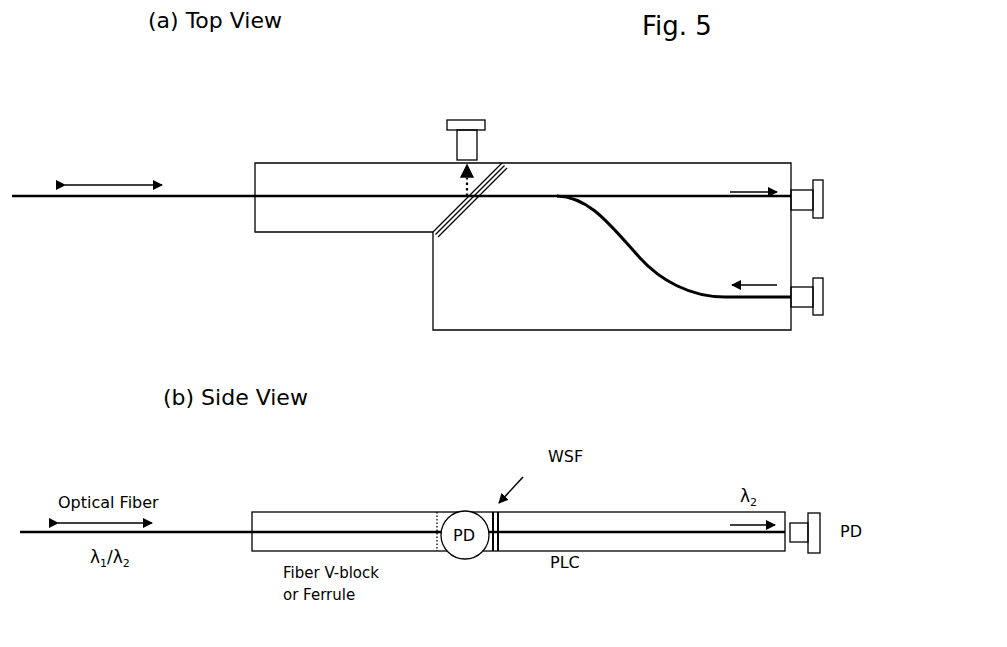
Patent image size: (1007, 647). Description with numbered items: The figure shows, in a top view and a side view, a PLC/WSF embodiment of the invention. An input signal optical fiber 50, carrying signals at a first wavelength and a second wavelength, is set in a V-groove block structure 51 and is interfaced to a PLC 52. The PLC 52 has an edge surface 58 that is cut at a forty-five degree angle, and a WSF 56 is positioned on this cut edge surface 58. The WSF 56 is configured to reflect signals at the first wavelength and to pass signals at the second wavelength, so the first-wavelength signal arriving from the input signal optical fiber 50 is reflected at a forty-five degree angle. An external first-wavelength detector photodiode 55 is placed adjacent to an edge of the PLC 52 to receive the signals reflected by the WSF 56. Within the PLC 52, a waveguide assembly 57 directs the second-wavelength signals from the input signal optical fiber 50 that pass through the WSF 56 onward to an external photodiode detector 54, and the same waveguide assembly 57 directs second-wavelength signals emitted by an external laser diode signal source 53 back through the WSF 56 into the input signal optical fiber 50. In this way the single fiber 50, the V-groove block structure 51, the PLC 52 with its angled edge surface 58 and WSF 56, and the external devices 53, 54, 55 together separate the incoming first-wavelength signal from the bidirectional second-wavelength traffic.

The input signal optical fiber 50 is at (214, 196).
The V-groove block structure 51 is at (278, 213).
The PLC 52 is at (550, 303).
The external laser diode signal source 53 is at (817, 313).
The external photodiode detector 54 is at (822, 180).
The external first-wavelength detector photodiode 55 is at (455, 120).
The WSF 56 is at (516, 152).
The waveguide assembly 57 is at (622, 198).
The edge surface 58 is at (503, 178).